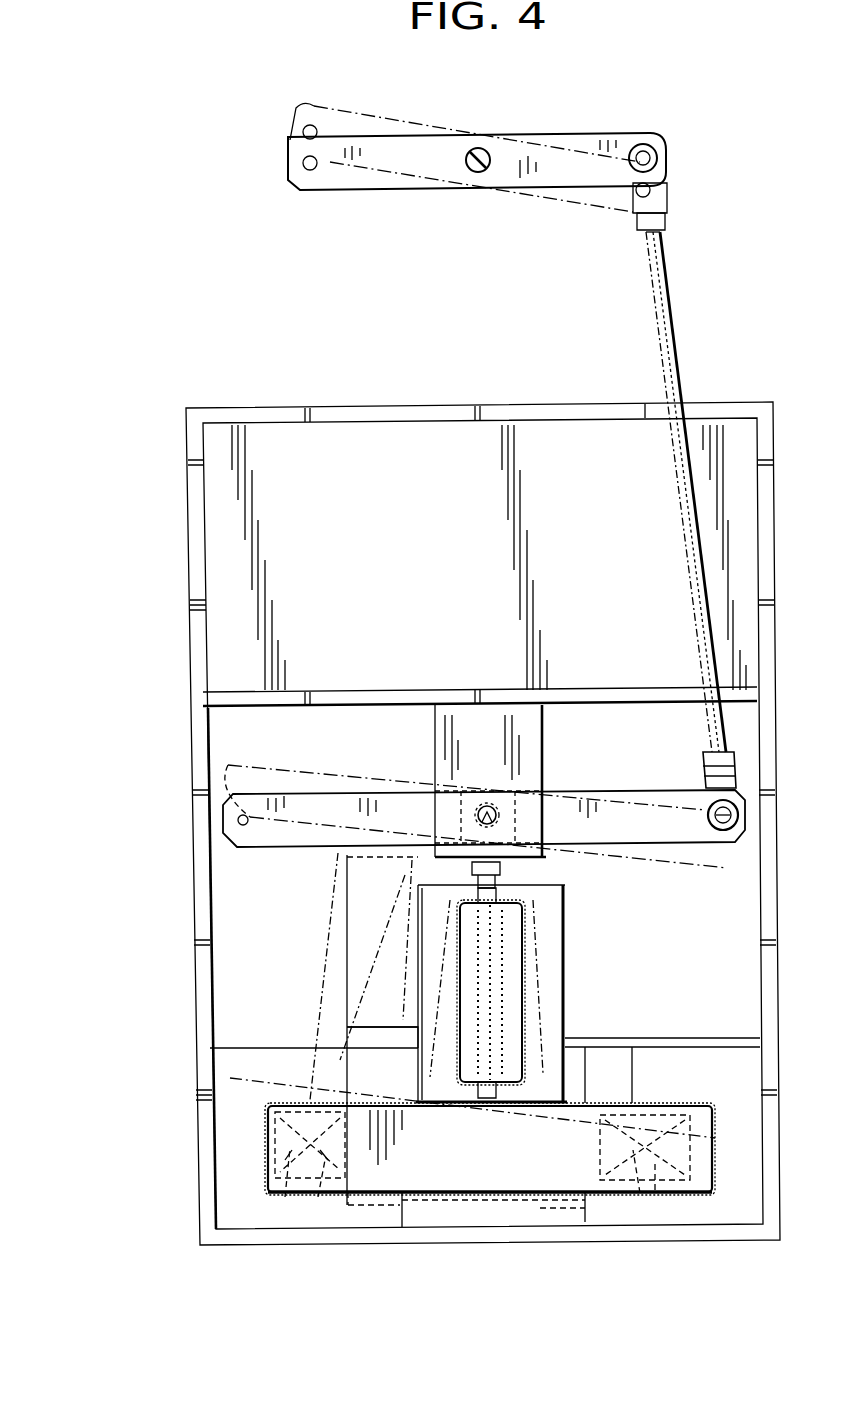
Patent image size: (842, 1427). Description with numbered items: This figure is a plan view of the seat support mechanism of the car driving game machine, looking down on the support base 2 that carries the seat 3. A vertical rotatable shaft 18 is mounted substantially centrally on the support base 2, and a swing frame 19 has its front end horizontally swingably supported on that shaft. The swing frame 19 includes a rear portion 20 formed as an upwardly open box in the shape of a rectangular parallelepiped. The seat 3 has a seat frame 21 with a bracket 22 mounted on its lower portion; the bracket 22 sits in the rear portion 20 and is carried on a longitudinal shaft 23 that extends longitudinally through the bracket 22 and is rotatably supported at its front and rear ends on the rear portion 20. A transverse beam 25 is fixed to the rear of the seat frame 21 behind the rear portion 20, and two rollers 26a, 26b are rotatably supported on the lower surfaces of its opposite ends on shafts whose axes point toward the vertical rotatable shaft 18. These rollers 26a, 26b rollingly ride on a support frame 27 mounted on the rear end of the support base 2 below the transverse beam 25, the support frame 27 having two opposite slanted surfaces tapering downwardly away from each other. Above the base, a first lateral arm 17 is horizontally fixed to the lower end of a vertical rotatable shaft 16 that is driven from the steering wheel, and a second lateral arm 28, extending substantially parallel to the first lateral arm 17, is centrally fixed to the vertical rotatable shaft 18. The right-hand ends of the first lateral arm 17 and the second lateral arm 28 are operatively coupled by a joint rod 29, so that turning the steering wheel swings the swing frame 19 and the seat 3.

The support base 2 is at (185, 556).
The seat 3 is at (244, 1029).
The seat frame 21 is at (345, 992).
The vertical rotatable shaft 16 is at (478, 148).
The first lateral arm 17 is at (572, 152).
The vertical rotatable shaft 18 is at (487, 802).
The swing frame 19 is at (565, 913).
The rear portion 20 is at (415, 1027).
The bracket 22 is at (520, 1035).
The longitudinal shaft 23 is at (500, 1000).
The transverse beam 25 is at (268, 1162).
The roller 26a is at (318, 1197).
The roller 26b is at (655, 1190).
The support frame 27 is at (478, 1218).
The second lateral arm 28 is at (608, 805).
The joint rod 29 is at (677, 322).